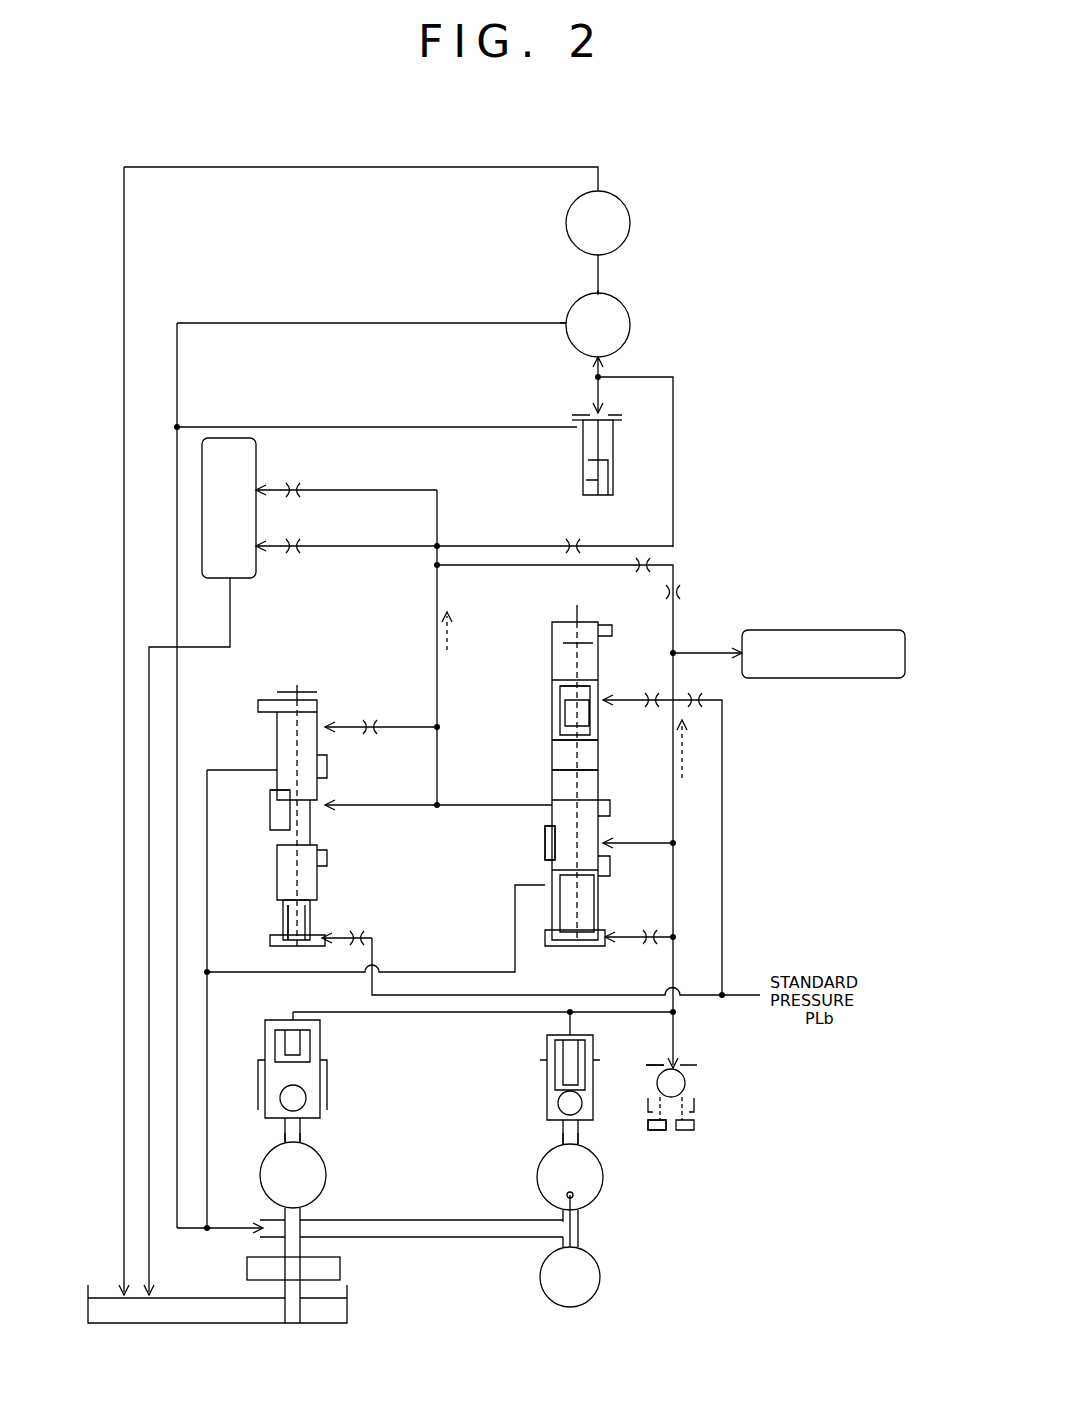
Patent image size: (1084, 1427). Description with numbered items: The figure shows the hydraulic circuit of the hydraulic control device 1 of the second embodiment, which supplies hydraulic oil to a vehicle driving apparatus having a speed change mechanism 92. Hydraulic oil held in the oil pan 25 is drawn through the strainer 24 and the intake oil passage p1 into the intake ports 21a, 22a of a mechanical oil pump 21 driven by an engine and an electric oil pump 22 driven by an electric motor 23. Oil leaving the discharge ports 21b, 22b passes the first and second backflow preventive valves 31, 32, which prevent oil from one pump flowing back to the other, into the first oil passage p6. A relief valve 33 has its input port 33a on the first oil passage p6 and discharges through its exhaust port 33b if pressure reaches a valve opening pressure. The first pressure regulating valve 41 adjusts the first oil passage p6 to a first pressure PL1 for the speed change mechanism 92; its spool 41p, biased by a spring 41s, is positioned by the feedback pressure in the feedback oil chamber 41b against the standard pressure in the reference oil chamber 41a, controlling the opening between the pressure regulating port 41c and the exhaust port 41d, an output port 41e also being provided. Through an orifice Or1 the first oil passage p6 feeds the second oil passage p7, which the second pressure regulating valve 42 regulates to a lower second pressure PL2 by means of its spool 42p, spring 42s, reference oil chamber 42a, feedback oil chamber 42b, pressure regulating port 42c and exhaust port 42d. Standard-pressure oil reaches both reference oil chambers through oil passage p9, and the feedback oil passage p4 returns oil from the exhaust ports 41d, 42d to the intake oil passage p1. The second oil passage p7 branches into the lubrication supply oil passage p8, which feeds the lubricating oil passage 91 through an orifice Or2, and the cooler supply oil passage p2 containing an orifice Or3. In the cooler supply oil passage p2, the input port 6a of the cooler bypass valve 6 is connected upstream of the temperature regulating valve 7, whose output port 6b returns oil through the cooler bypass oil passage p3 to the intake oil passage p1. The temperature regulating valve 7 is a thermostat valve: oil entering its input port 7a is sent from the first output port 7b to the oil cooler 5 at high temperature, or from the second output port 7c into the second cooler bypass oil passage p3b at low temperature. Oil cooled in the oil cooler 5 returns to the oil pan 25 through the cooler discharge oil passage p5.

The hydraulic control device 1 is at (712, 283).
The oil cooler 5 is at (631, 210).
The cooler bypass valve 6 is at (579, 450).
The input port 6a is at (603, 418).
The output port 6b is at (580, 415).
The temperature regulating valve 7 is at (631, 319).
The input port 7a is at (590, 352).
The first output port 7b is at (605, 297).
The second output port 7c is at (566, 323).
The mechanical oil pump 21 is at (327, 1166).
The intake port 21a is at (284, 1222).
The discharge port 21b is at (284, 1139).
The electric oil pump 22 is at (607, 1183).
The intake port 22a is at (580, 1216).
The discharge port 22b is at (562, 1142).
The electric motor 23 is at (599, 1282).
The strainer 24 is at (247, 1268).
The oil pan 25 is at (347, 1318).
The first backflow preventive valve 31 is at (320, 1088).
The second backflow preventive valve 32 is at (547, 1068).
The relief valve 33 is at (683, 1082).
The input port 33a is at (672, 1065).
The exhaust port 33b is at (672, 1127).
The first pressure regulating valve 41 is at (552, 623).
The reference oil chamber 41a is at (600, 692).
The feedback oil chamber 41b is at (586, 945).
The pressure regulating port 41c is at (603, 831).
The exhaust port 41d is at (545, 870).
The output port 41e is at (553, 791).
The spool 41p is at (552, 746).
The spring 41s is at (553, 710).
The second pressure regulating valve 42 is at (316, 682).
The reference oil chamber 42a is at (310, 940).
The feedback oil chamber 42b is at (272, 730).
The pressure regulating port 42c is at (328, 805).
The exhaust port 42d is at (270, 780).
The spool 42p is at (282, 855).
The spring 42s is at (285, 930).
The lubricating oil passage 91 is at (256, 565).
The speed change mechanism 92 is at (866, 630).
The intake oil passage p1 is at (338, 1237).
The cooler supply oil passage p2 is at (598, 270).
The cooler bypass oil passage p3 is at (312, 427).
The second cooler bypass oil passage p3b is at (177, 390).
The feedback oil passage p4 is at (207, 770).
The cooler discharge oil passage p5 is at (303, 167).
The first oil passage p6 is at (673, 890).
The second oil passage p7 is at (594, 565).
The lubrication supply oil passage p8 is at (408, 545).
The oil passage p9 is at (722, 857).
The orifice Or1 is at (673, 592).
The orifice Or2 is at (293, 487).
The orifice Or3 is at (573, 544).
The first pressure PL1 is at (688, 758).
The second pressure PL2 is at (447, 645).